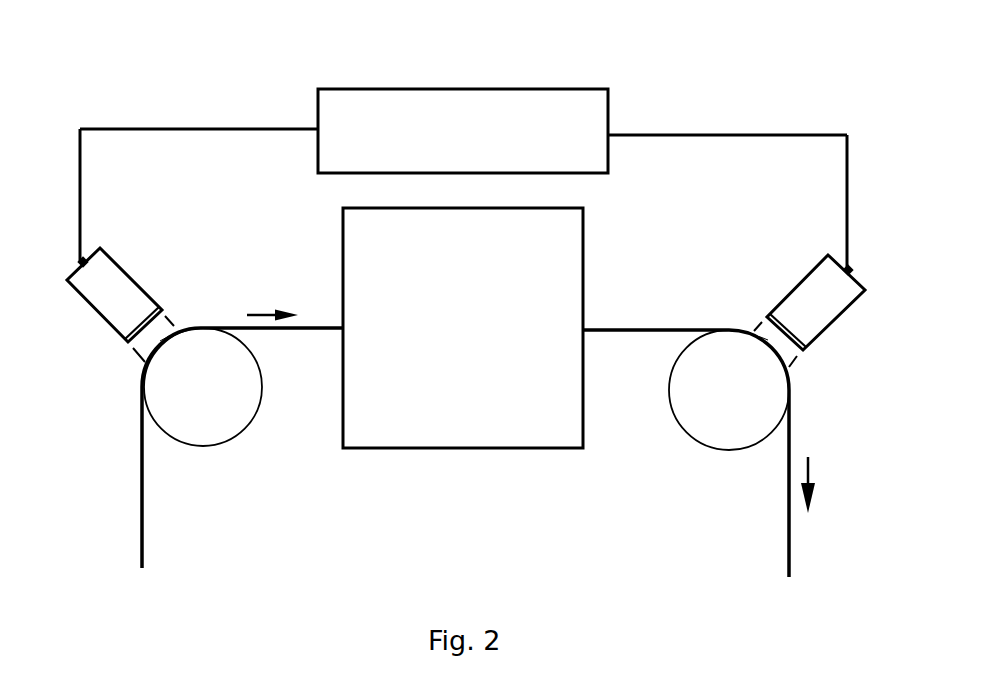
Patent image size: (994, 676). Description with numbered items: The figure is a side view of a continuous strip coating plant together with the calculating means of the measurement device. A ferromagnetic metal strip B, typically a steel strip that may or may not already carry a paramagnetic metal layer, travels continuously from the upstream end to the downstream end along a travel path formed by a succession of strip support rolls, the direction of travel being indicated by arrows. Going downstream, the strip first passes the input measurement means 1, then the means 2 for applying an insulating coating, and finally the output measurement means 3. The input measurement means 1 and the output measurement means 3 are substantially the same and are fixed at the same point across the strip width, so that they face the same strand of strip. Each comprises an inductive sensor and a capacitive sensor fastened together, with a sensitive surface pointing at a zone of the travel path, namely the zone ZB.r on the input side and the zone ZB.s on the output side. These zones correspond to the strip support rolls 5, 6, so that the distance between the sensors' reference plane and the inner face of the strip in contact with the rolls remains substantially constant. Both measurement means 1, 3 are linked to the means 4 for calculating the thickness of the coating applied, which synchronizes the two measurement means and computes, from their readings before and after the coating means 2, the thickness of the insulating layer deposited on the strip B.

The input measurement means 1 is at (106, 292).
The means for applying an insulating coating 2 is at (461, 428).
The output measurement means 3 is at (820, 316).
The means for calculating the thickness of the coating applied 4 is at (570, 118).
The strip support roll 5 is at (198, 425).
The strip support roll 6 is at (723, 420).
The ferromagnetic metal strip B is at (142, 493).
The input-side measurement zone of the strip travel path ZB.r is at (157, 342).
The output-side measurement zone of the strip travel path ZB.s is at (765, 338).